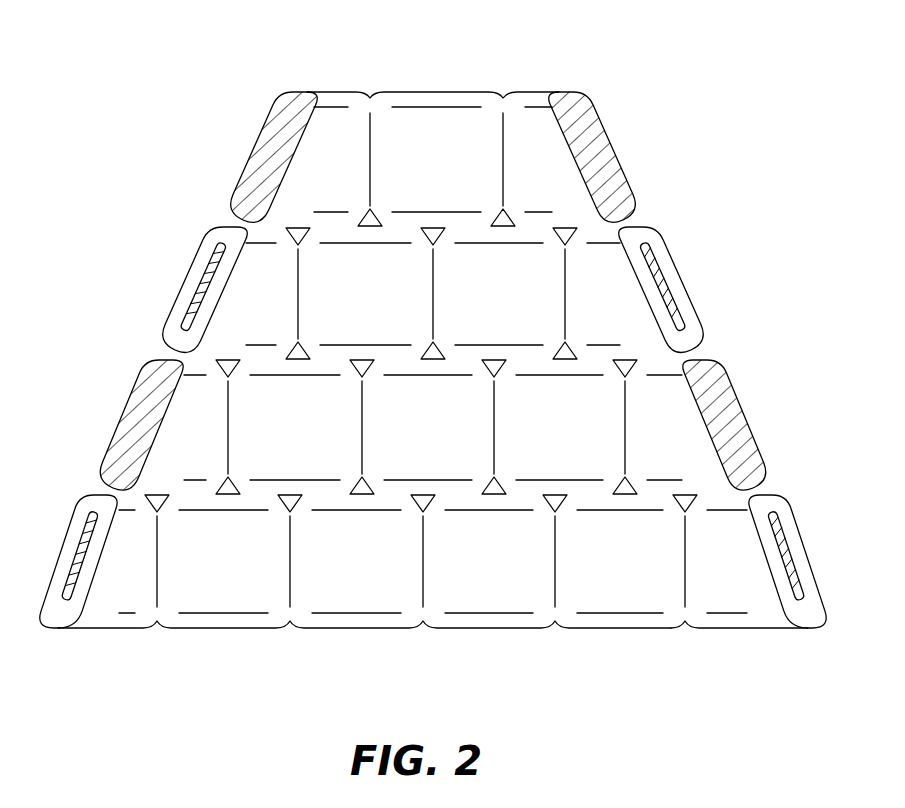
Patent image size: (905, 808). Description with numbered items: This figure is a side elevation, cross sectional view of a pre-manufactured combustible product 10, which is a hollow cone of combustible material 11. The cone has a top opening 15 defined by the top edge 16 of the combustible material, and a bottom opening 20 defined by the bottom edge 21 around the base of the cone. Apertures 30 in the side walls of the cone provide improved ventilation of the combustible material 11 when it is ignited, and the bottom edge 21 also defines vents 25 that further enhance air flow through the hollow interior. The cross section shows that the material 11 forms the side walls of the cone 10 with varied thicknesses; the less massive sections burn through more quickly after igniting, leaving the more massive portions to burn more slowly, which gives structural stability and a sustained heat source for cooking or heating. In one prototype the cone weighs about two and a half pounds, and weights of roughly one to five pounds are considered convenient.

The combustible product 10 is at (695, 252).
The combustible material 11 is at (722, 430).
The top opening 15 is at (435, 88).
The top edge 16 is at (533, 97).
The bottom opening 20 is at (220, 634).
The bottom edge 21 is at (339, 623).
The vents 25 is at (686, 632).
The apertures 30 is at (290, 355).